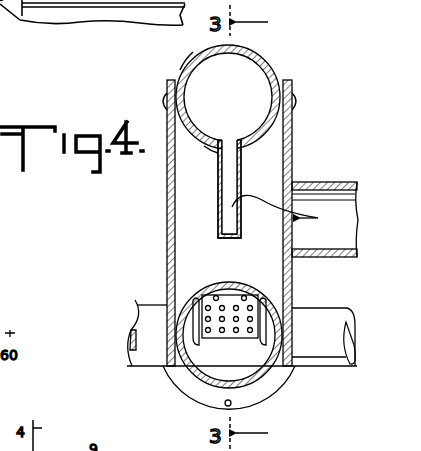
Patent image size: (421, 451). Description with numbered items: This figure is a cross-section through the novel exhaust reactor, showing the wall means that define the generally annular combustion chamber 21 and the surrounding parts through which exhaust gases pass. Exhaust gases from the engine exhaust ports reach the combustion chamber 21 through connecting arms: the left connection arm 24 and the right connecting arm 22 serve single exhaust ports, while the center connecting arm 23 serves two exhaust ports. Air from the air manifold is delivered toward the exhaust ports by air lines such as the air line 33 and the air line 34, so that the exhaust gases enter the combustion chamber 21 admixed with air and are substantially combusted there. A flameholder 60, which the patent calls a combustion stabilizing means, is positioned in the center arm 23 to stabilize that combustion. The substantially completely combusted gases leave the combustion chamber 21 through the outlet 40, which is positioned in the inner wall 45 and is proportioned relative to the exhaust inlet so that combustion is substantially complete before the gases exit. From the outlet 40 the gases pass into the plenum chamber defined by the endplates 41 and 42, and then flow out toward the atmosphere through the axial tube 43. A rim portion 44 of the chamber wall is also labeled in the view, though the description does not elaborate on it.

The annular combustion chamber 21 is at (275, 74).
The right connecting arm 22 is at (327, 310).
The center connecting arm 23 is at (270, 384).
The left connection arm 24 is at (135, 300).
The air line 33 is at (200, 336).
The air line 34 is at (262, 334).
The outlet 40 is at (230, 190).
The endplate 41 is at (292, 162).
The endplate 42 is at (167, 205).
The axial tube 43 is at (331, 196).
The ring outer surface 44 is at (197, 58).
The inner wall 45 is at (206, 156).
The flameholder 60 is at (238, 290).